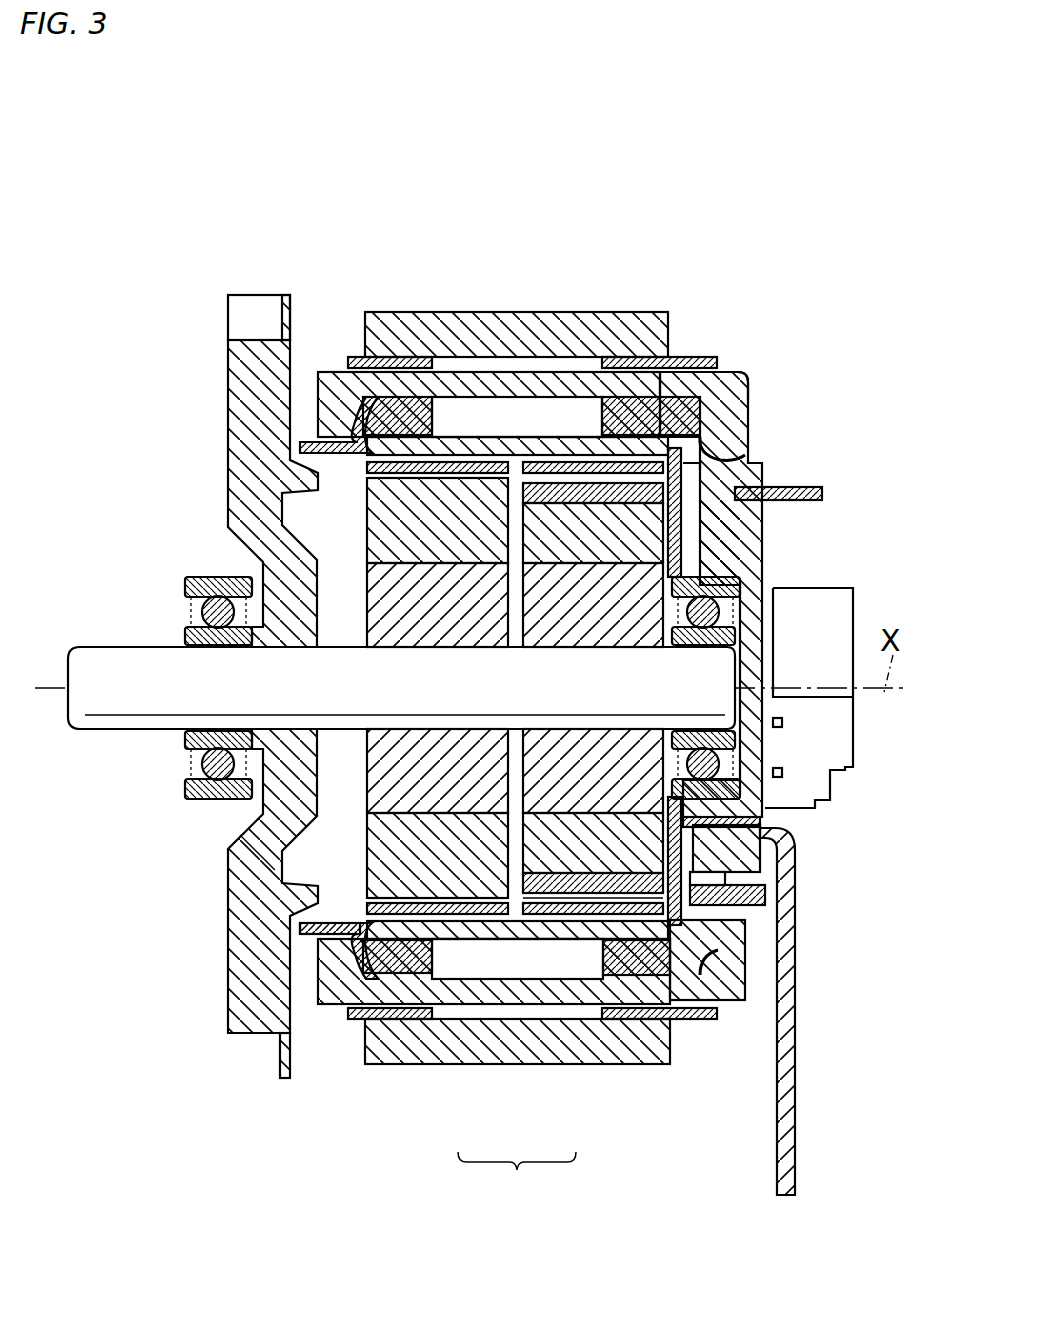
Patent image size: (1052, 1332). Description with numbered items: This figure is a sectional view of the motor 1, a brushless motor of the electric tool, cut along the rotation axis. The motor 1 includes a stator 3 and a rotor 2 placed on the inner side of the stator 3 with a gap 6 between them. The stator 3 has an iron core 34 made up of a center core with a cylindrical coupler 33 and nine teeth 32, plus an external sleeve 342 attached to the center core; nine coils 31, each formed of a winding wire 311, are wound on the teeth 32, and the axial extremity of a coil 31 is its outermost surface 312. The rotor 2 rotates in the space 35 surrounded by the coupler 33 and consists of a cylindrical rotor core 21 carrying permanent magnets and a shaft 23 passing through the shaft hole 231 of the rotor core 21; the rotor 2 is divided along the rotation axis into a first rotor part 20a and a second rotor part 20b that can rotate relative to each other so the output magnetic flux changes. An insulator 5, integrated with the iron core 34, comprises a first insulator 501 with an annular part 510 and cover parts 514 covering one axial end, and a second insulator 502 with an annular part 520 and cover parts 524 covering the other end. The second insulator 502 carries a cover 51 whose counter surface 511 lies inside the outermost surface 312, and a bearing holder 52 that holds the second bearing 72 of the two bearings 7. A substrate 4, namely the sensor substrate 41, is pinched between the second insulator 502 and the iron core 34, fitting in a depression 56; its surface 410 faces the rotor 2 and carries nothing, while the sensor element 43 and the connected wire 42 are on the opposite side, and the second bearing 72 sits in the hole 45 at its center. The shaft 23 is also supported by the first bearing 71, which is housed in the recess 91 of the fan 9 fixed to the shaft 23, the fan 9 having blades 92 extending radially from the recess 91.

The motor 1 is at (316, 268).
The rotor 2 is at (494, 830).
The first rotor part 20a is at (558, 800).
The second rotor part 20b is at (467, 890).
The rotor core 21 is at (378, 580).
The shaft 23 is at (401, 698).
The shaft hole 231 is at (455, 740).
The stator 3 is at (516, 696).
The coil 31 is at (492, 689).
The winding wire 311 is at (537, 383).
The outermost surface 312 is at (752, 393).
The tooth 32 is at (463, 408).
The coupler 33 is at (625, 930).
The iron core 34 is at (493, 445).
The external sleeve 342 is at (630, 322).
The space 35 is at (515, 905).
The substrate 4 is at (742, 821).
The sensor substrate 41 is at (697, 905).
The surface 410 is at (667, 533).
The wire 42 is at (787, 1113).
The sensor element 43 is at (700, 853).
The hole 45 is at (673, 793).
The insulator 5 is at (586, 685).
The first insulator 501 is at (366, 685).
The second insulator 502 is at (737, 691).
The cover 51 is at (760, 480).
The annular part 510 is at (330, 916).
The counter surface 511 is at (703, 523).
The cover part 514 is at (408, 403).
The bearing holder 52 is at (742, 598).
The annular part 520 is at (705, 430).
The cover part 524 is at (647, 407).
The depression 56 is at (692, 455).
The gap 6 is at (553, 462).
The bearing 7 is at (202, 662).
The first bearing 71 is at (195, 585).
The second bearing 72 is at (735, 742).
The fan 9 is at (241, 686).
The recess 91 is at (260, 847).
The blades 92 is at (228, 978).